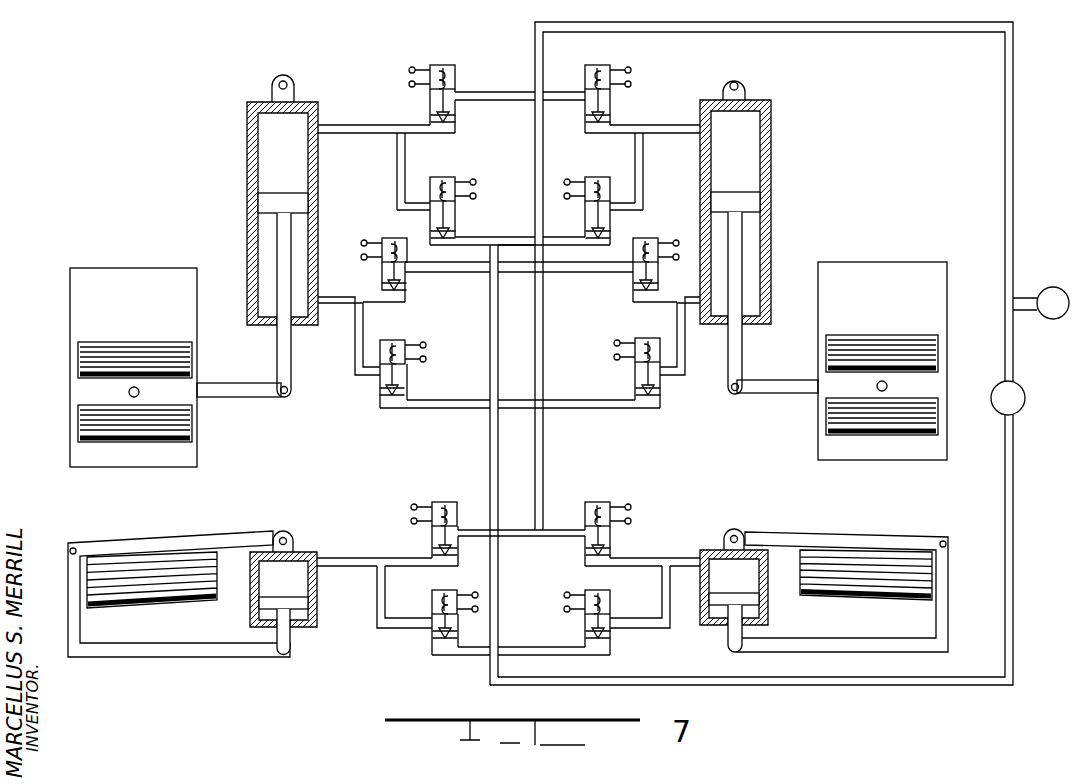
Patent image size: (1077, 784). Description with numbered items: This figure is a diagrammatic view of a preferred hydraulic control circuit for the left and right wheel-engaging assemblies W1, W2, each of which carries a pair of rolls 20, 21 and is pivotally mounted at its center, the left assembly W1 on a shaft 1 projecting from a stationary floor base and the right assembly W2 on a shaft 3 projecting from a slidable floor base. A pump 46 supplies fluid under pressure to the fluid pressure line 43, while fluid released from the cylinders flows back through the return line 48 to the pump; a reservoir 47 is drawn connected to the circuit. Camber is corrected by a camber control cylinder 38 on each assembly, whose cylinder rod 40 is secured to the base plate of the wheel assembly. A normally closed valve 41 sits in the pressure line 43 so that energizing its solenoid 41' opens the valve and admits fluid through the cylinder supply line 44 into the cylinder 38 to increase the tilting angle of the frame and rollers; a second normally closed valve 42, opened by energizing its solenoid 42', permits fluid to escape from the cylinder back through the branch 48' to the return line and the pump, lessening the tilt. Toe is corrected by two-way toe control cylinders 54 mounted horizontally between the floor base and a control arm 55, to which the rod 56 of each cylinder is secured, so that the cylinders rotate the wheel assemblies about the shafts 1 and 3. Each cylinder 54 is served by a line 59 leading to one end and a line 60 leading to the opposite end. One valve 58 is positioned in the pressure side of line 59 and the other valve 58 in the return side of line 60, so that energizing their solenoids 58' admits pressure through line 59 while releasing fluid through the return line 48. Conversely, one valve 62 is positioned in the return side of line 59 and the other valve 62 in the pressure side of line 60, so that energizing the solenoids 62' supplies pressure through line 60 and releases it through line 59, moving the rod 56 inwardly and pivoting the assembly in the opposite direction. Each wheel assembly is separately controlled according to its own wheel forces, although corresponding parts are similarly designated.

The shaft 1 is at (128, 392).
The shaft 3 is at (888, 386).
The roll 20 is at (83, 354).
The roll 21 is at (80, 421).
The camber control cylinder 38 is at (246, 608).
The cylinder rod 40 is at (292, 636).
The valve 41 is at (520, 546).
The solenoid 41' is at (529, 493).
The valve 42 is at (498, 641).
The solenoid 42' is at (526, 599).
The fluid pressure line 43 is at (546, 348).
The cylinder supply line 44 is at (350, 557).
The pump 46 is at (1021, 408).
The reservoir / accumulator 47 is at (1053, 288).
The return line 48 is at (751, 370).
The return branch line 48' is at (512, 617).
The toe control cylinder 54 is at (244, 157).
The control arm 55 is at (235, 400).
The rod 56 is at (291, 368).
The valve 58 is at (520, 248).
The solenoid 58' is at (520, 201).
The line 59 is at (334, 128).
The line 60 is at (338, 302).
The valve 62 is at (531, 255).
The solenoid 62' is at (520, 223).
The left wheel-engaging assembly W1 is at (67, 325).
The right wheel-engaging assembly W2 is at (950, 282).